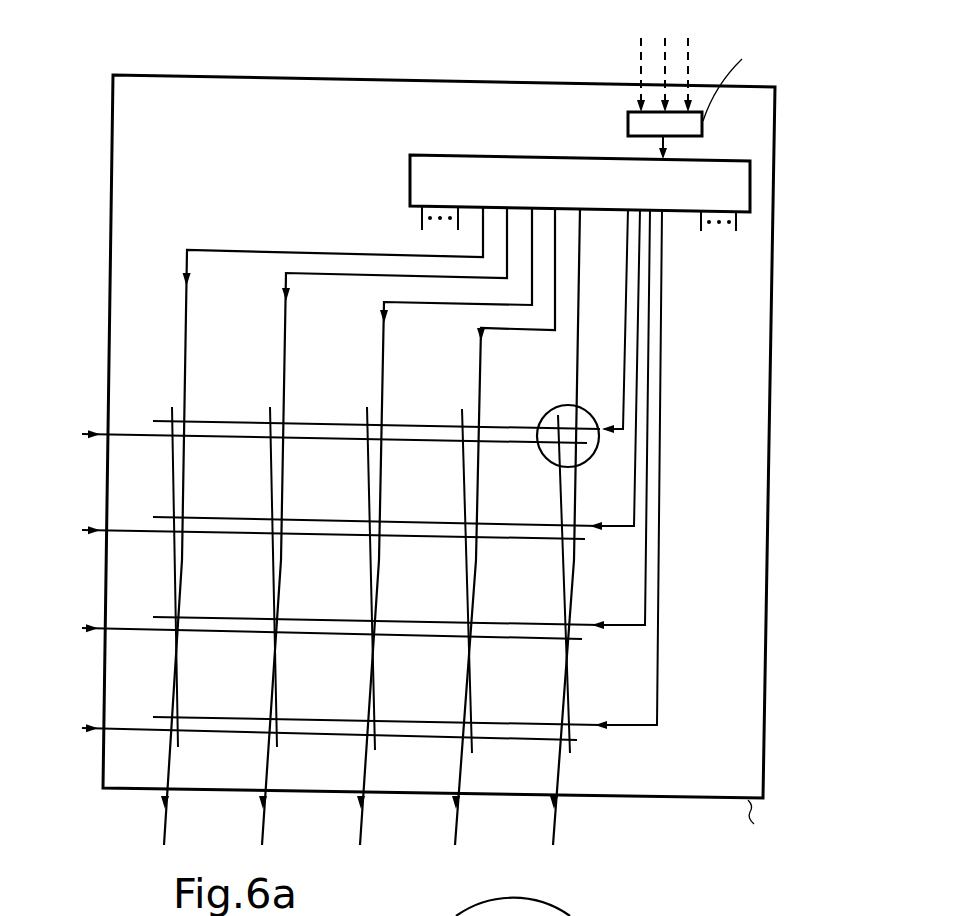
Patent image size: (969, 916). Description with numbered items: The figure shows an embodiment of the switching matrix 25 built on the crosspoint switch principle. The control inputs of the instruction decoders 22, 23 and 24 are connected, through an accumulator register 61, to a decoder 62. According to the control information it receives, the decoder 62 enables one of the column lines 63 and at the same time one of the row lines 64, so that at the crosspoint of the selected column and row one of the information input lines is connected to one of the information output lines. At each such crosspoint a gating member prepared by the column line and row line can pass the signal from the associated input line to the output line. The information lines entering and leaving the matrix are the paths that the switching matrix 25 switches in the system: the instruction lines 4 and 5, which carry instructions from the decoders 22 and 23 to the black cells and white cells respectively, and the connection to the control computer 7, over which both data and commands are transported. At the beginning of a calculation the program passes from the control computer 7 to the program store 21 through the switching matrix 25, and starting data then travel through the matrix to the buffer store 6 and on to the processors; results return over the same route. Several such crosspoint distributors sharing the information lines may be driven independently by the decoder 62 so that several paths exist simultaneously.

The switching matrix 25 is at (672, 800).
The accumulator register 61 is at (628, 126).
The decoder 62 is at (446, 156).
The column lines 63 is at (284, 365).
The row lines 64 is at (617, 433).
The control computer 7 is at (324, 646).
The instruction decoder 22 is at (345, 277).
The instruction decoder 23 is at (359, 327).
The instruction decoder 24 is at (700, 62).
The buffer store 6 is at (322, 794).
The program store 21 is at (261, 834).
The instruction line 4 is at (455, 833).
The instruction line 5 is at (554, 833).